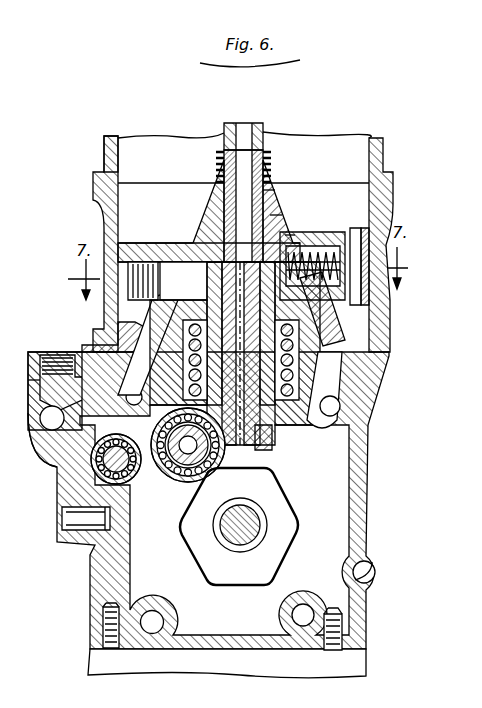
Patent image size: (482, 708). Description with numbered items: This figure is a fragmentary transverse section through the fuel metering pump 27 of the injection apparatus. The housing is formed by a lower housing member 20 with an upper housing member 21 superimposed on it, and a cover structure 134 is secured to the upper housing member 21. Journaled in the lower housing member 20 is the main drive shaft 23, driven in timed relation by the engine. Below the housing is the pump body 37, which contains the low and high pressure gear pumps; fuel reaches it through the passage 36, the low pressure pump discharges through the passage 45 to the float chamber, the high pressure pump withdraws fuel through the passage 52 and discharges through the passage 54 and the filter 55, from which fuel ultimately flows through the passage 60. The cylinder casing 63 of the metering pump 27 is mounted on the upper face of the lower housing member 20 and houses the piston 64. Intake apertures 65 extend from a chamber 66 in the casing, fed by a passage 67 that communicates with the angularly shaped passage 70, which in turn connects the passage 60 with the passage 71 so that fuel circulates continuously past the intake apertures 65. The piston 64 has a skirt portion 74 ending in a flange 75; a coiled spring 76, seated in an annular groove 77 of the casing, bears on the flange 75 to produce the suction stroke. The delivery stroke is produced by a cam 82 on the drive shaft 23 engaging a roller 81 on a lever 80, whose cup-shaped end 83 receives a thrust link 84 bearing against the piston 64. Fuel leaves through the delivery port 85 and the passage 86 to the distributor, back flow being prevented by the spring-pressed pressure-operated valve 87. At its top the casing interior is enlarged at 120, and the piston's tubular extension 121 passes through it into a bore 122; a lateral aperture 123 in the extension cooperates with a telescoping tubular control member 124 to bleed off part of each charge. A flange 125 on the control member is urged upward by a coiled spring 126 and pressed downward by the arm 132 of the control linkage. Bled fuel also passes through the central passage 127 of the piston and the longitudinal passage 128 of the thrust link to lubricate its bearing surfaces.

The lower housing member 20 is at (368, 484).
The upper housing member 21 is at (97, 200).
The main drive shaft 23 is at (262, 514).
The metering pump 27 is at (285, 405).
The passage 36 is at (152, 628).
The pump body 37 is at (95, 662).
The passage 45 is at (303, 625).
The passage 52 is at (95, 572).
The passage 54 is at (370, 582).
The filter 55 is at (20, 314).
The passage 60 is at (32, 445).
The cylinder casing 63 is at (215, 183).
The piston 64 is at (200, 262).
The intake port apertures 65 is at (183, 281).
The chamber 66 is at (158, 262).
The passage 67 is at (130, 330).
The angularly shaped passage 70 is at (90, 375).
The passage 71 is at (138, 390).
The skirt portion 74 is at (322, 309).
The flange 75 is at (324, 390).
The coiled spring 76 is at (188, 388).
The annular groove 77 is at (148, 344).
The lever 80 is at (140, 478).
The roller 81 is at (180, 478).
The cam 82 is at (214, 572).
The cup-shaped end 83 is at (278, 448).
The thrust link 84 is at (270, 402).
The delivery port 85 is at (292, 232).
The passage 86 is at (340, 408).
The spring-pressed pressure-operated valve 87 is at (325, 232).
The enlarged portion 120 is at (205, 240).
The tubular extension 121 is at (268, 190).
The bore 122 is at (230, 210).
The lateral aperture 123 is at (292, 232).
The tubular control member 124 is at (280, 215).
The flange 125 is at (268, 160).
The coiled spring 126 is at (222, 165).
The central passage 127 is at (352, 306).
The longitudinal passage 128 is at (340, 330).
The arm 132 is at (240, 123).
The cover structure 134 is at (104, 148).